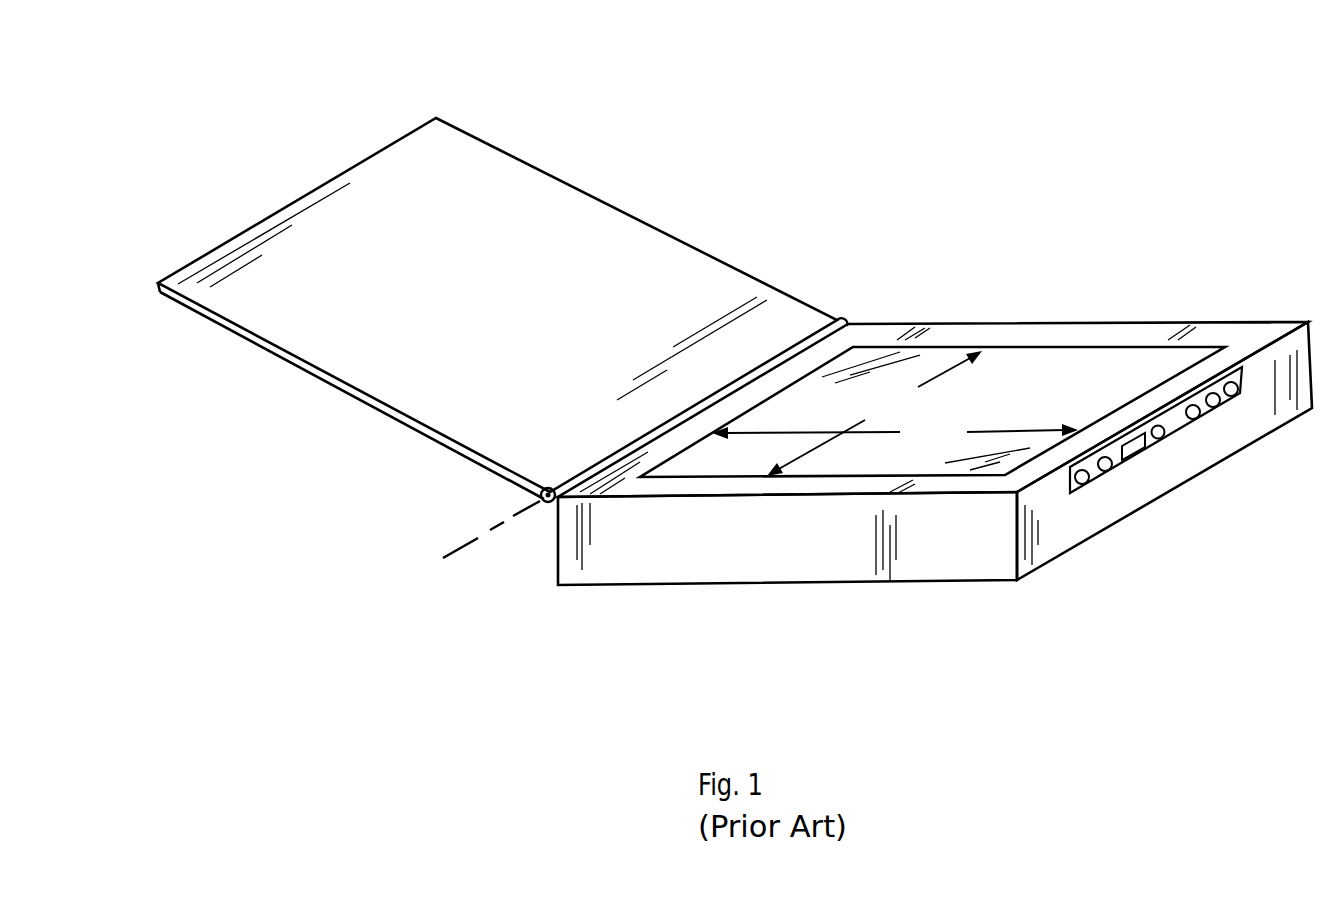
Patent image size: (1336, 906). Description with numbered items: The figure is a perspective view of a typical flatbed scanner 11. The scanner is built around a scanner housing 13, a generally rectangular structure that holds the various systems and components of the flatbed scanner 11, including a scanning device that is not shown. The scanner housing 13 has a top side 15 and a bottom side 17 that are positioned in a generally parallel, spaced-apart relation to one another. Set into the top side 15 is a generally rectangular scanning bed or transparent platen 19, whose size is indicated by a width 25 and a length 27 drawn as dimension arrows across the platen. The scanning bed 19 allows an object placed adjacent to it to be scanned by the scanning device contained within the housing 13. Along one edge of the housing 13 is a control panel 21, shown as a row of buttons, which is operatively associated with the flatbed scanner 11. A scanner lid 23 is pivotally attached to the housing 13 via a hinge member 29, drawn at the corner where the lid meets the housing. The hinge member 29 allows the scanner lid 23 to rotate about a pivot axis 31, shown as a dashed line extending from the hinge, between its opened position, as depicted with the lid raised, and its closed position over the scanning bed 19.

The flatbed scanner 11 is at (220, 88).
The scanner housing 13 is at (750, 589).
The top side 15 is at (960, 322).
The bottom side 17 is at (933, 580).
The scanning bed 19 is at (1074, 398).
The control panel 21 is at (1147, 455).
The scanner lid 23 is at (471, 282).
The width 25 is at (874, 413).
The length 27 is at (895, 432).
The hinge member 29 is at (540, 494).
The pivot axis 31 is at (477, 538).